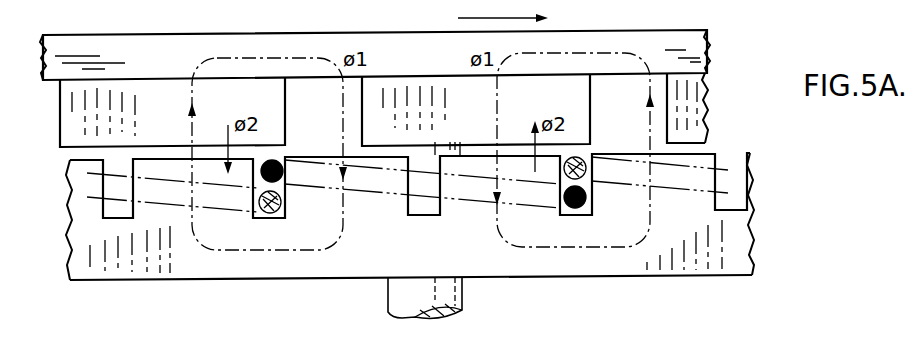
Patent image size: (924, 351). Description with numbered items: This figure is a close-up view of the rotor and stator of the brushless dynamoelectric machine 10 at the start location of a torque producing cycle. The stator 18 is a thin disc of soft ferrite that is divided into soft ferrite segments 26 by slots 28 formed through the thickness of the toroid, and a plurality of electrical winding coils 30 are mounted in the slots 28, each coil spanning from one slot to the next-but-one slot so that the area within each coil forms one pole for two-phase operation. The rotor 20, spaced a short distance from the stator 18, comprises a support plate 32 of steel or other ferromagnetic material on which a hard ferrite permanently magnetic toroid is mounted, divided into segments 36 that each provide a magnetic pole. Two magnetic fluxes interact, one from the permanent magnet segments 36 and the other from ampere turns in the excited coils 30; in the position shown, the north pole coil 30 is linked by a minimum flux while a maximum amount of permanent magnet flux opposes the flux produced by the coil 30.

The brushless dynamoelectric machine 10 is at (347, 282).
The stator 18 is at (620, 277).
The rotor 20 is at (320, 35).
The soft ferrite segments 26 is at (370, 195).
The slots 28 is at (284, 203).
The electrical winding coils 30 is at (471, 195).
The support plate 32 is at (466, 43).
The segments 36 is at (137, 100).